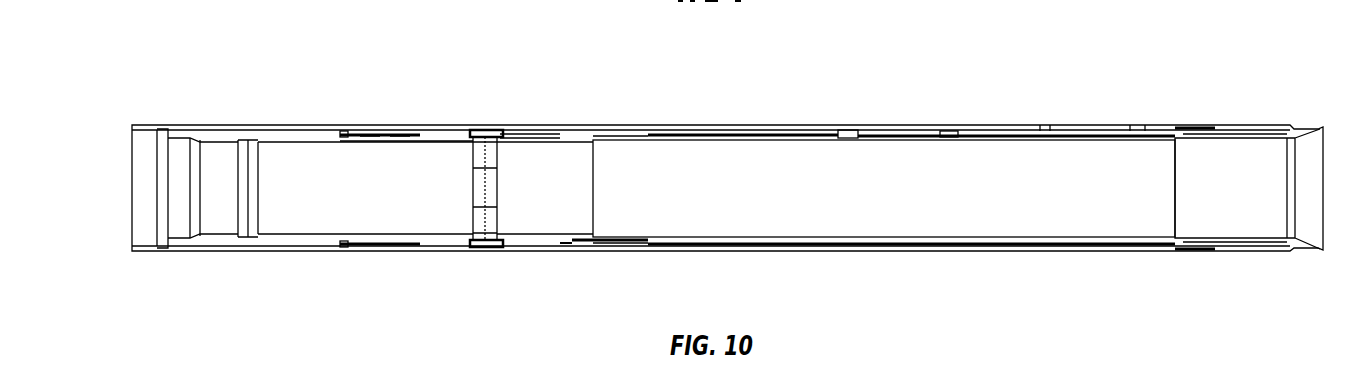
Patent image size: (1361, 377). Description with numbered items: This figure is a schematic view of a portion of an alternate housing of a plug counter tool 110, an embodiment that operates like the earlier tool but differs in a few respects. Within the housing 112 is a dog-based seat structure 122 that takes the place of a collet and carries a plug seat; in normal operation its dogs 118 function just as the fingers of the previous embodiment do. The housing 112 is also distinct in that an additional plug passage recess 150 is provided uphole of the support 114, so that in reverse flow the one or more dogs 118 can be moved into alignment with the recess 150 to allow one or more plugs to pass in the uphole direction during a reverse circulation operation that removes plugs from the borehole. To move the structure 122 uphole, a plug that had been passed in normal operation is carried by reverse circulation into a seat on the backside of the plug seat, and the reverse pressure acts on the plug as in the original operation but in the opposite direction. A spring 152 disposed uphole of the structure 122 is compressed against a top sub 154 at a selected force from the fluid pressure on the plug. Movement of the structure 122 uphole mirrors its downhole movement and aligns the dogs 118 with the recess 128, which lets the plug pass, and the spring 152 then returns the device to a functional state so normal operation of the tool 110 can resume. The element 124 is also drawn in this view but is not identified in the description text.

The downhole tool assembly 110 is at (246, 50).
The housing 112 is at (565, 136).
The mandrel 114 is at (524, 128).
The piston 118 is at (483, 159).
The lower sleeve 122 is at (568, 240).
The collet 124 is at (700, 135).
The shear member 128 is at (618, 140).
The valve 150 is at (447, 134).
The port 152 is at (398, 128).
The seal 154 is at (367, 128).